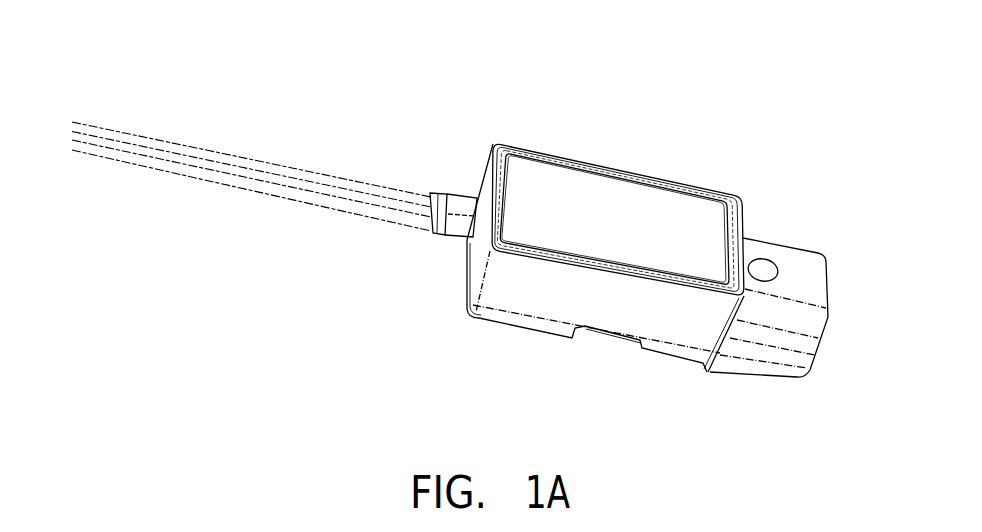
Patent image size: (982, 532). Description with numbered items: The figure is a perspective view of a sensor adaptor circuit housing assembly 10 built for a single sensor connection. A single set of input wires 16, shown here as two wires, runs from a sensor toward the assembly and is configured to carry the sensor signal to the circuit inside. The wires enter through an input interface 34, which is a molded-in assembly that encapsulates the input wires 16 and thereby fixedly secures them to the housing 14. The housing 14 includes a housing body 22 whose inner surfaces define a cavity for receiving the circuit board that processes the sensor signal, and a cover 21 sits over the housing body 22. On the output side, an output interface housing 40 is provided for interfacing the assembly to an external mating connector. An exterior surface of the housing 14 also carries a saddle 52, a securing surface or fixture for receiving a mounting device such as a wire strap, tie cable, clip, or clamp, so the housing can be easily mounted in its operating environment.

The sensor adaptor circuit housing assembly 10 is at (629, 86).
The housing 14 is at (443, 280).
The input wires 16 is at (237, 185).
The cover 21 is at (680, 212).
The housing body 22 is at (675, 322).
The input interface 34 is at (460, 207).
The output interface housing 40 is at (782, 263).
The saddle 52 is at (599, 358).